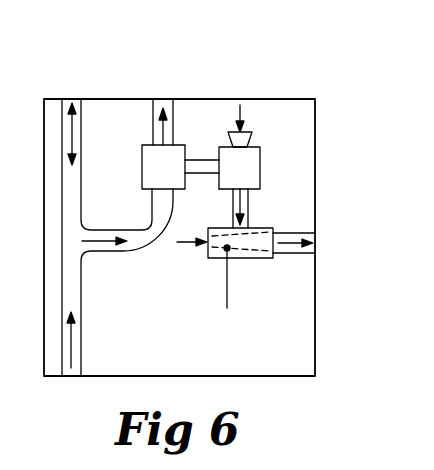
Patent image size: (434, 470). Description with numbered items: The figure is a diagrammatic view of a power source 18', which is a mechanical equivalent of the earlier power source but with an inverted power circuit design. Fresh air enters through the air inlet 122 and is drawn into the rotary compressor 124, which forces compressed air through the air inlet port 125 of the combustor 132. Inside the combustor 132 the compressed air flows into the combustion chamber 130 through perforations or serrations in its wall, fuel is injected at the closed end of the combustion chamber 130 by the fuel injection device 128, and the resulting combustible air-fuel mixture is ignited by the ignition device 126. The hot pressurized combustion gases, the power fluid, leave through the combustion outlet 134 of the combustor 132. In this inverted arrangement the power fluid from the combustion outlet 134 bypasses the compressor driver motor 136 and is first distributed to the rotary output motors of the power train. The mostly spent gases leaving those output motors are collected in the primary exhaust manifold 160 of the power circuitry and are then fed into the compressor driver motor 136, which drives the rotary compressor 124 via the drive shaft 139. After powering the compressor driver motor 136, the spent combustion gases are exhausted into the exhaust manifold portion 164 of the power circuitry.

The power source 18' is at (201, 193).
The air inlet 122 is at (248, 140).
The rotary compressor 124 is at (220, 187).
The air inlet port 125 is at (247, 208).
The ignition device 126 is at (225, 295).
The fuel injection device 128 is at (192, 245).
The combustion chamber 130 is at (258, 275).
The combustor 132 is at (273, 252).
The combustion outlet 134 is at (317, 238).
The compressor driver motor 136 is at (145, 178).
The drive shaft 139 is at (199, 160).
The primary exhaust manifold 160 is at (142, 248).
The exhaust manifold portion 164 is at (160, 99).